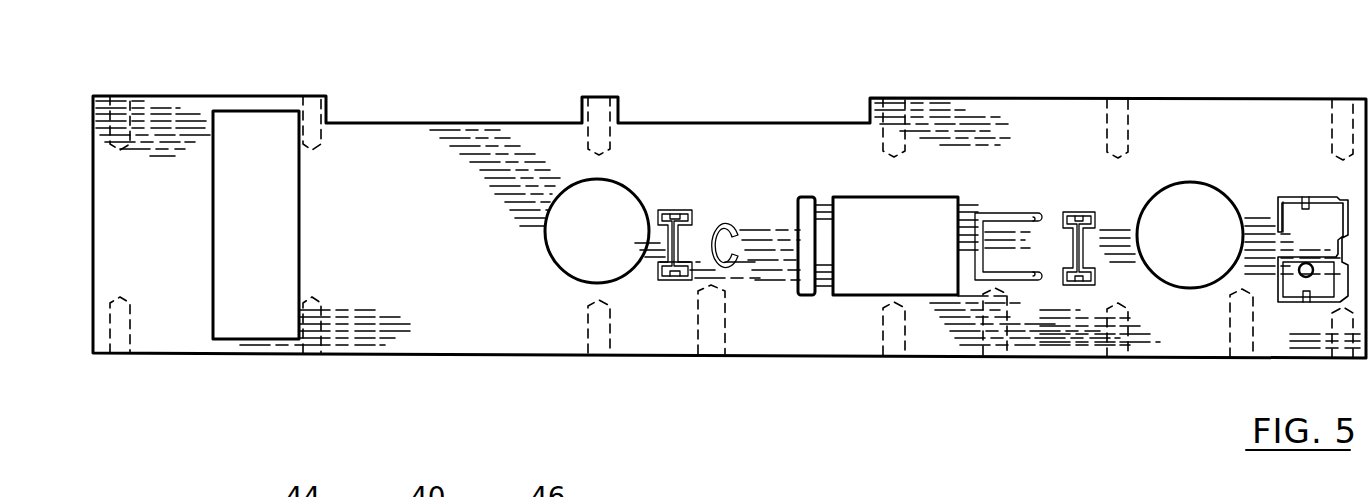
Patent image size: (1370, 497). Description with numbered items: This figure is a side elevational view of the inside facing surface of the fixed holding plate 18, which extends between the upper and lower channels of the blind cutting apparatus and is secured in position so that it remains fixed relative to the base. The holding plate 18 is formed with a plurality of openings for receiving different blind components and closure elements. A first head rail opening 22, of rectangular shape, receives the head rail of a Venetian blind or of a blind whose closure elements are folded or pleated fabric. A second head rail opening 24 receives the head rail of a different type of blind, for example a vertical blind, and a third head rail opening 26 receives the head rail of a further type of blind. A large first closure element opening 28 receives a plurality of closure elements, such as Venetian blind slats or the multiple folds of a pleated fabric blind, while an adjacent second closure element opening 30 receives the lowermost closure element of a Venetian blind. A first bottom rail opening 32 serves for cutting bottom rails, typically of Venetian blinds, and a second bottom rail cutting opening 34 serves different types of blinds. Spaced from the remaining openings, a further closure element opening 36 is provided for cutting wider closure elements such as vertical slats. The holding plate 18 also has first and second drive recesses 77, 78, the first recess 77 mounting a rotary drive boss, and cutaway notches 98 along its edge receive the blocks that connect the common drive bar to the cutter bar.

The holding plate 18 is at (168, 170).
The further closure element opening 36 is at (297, 178).
The cutaway notches 98 is at (428, 123).
The second drive recess 78 is at (547, 210).
The second bottom rail cutting opening 34 is at (673, 208).
The first bottom rail opening 32 is at (717, 223).
The second closure element opening 30 is at (806, 197).
The first closure element opening 28 is at (924, 215).
The third head rail opening 26 is at (1010, 213).
The second head rail opening 24 is at (1072, 212).
The first drive recess 77 is at (1185, 180).
The first head rail opening 22 is at (1312, 195).